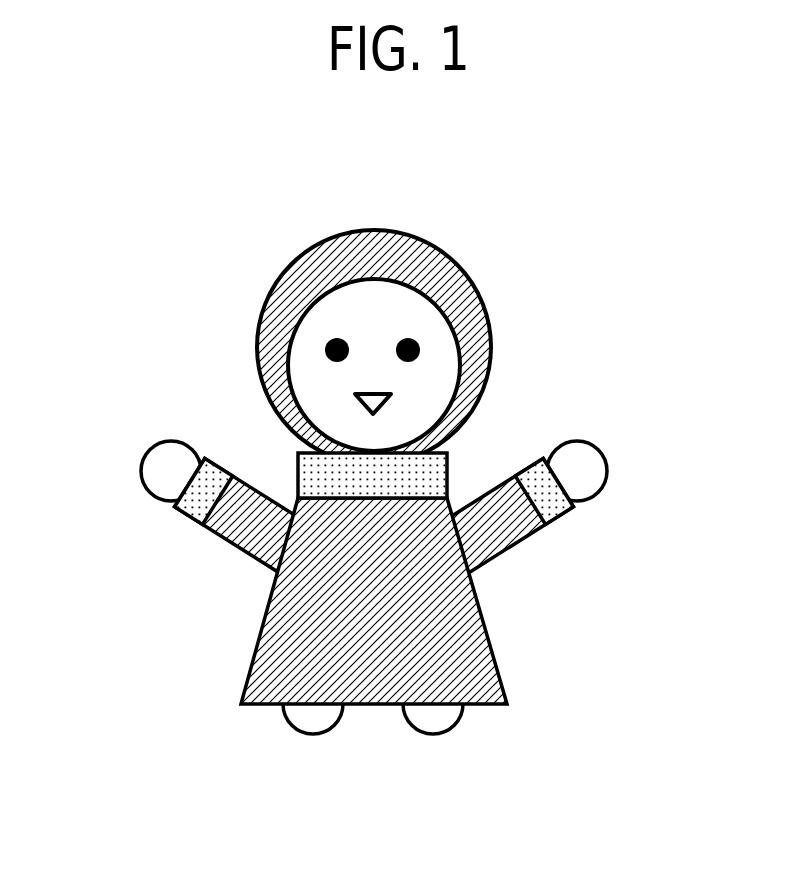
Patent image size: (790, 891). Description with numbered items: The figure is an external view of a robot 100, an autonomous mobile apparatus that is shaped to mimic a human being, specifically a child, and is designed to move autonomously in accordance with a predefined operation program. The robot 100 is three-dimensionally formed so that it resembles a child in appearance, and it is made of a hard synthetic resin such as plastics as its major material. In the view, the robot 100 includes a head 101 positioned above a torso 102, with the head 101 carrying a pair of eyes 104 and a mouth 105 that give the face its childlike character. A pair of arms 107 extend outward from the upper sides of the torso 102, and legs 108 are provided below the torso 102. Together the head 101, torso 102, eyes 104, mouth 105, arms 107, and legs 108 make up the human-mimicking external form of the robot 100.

The robot 100 is at (156, 228).
The head 101 is at (457, 260).
The torso 102 is at (257, 646).
The eyes 104 is at (325, 350).
The mouth 105 is at (357, 397).
The arms 107 is at (146, 454).
The legs 108 is at (286, 717).